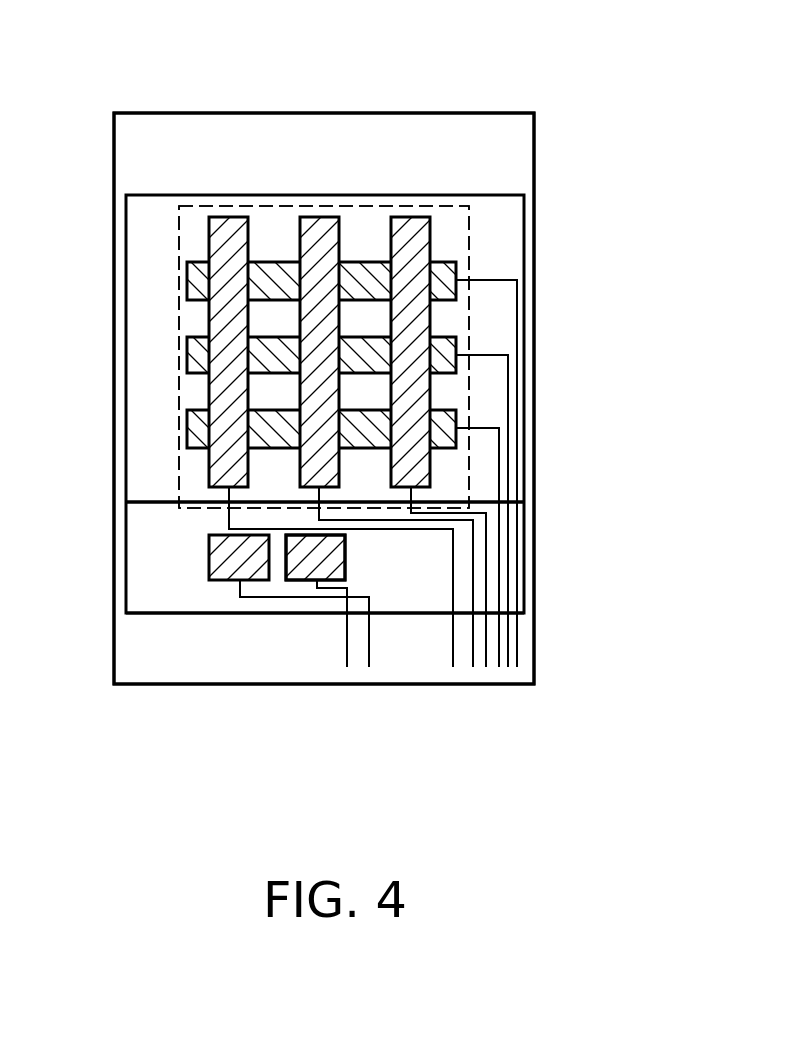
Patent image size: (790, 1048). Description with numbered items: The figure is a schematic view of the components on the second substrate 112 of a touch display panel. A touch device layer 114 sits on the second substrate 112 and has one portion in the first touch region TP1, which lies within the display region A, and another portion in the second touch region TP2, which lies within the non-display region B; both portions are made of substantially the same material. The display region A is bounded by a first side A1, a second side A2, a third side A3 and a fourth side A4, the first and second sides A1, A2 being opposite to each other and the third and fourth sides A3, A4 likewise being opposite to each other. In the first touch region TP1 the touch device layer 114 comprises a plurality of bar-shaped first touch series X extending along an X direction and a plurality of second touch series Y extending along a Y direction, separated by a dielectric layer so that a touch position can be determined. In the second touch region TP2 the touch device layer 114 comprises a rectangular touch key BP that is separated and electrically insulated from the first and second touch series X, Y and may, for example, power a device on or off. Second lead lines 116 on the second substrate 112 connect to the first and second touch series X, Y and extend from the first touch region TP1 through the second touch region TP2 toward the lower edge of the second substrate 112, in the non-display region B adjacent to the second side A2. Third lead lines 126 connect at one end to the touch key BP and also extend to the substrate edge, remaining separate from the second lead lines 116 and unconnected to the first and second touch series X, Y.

The second substrate 112 is at (114, 602).
The non-display region B is at (509, 155).
The first touch region TP1 is at (126, 378).
The second touch region TP2 is at (126, 520).
The display region A is at (470, 235).
The first side A1 is at (380, 202).
The second side A2 is at (194, 512).
The third side A3 is at (476, 298).
The fourth side A4 is at (173, 242).
The first touch series X is at (442, 275).
The second touch series Y is at (320, 228).
The second lead lines 116 is at (499, 461).
The touch key BP is at (225, 575).
The third lead lines 126 is at (319, 577).
The touch device layer 114 is at (671, 612).